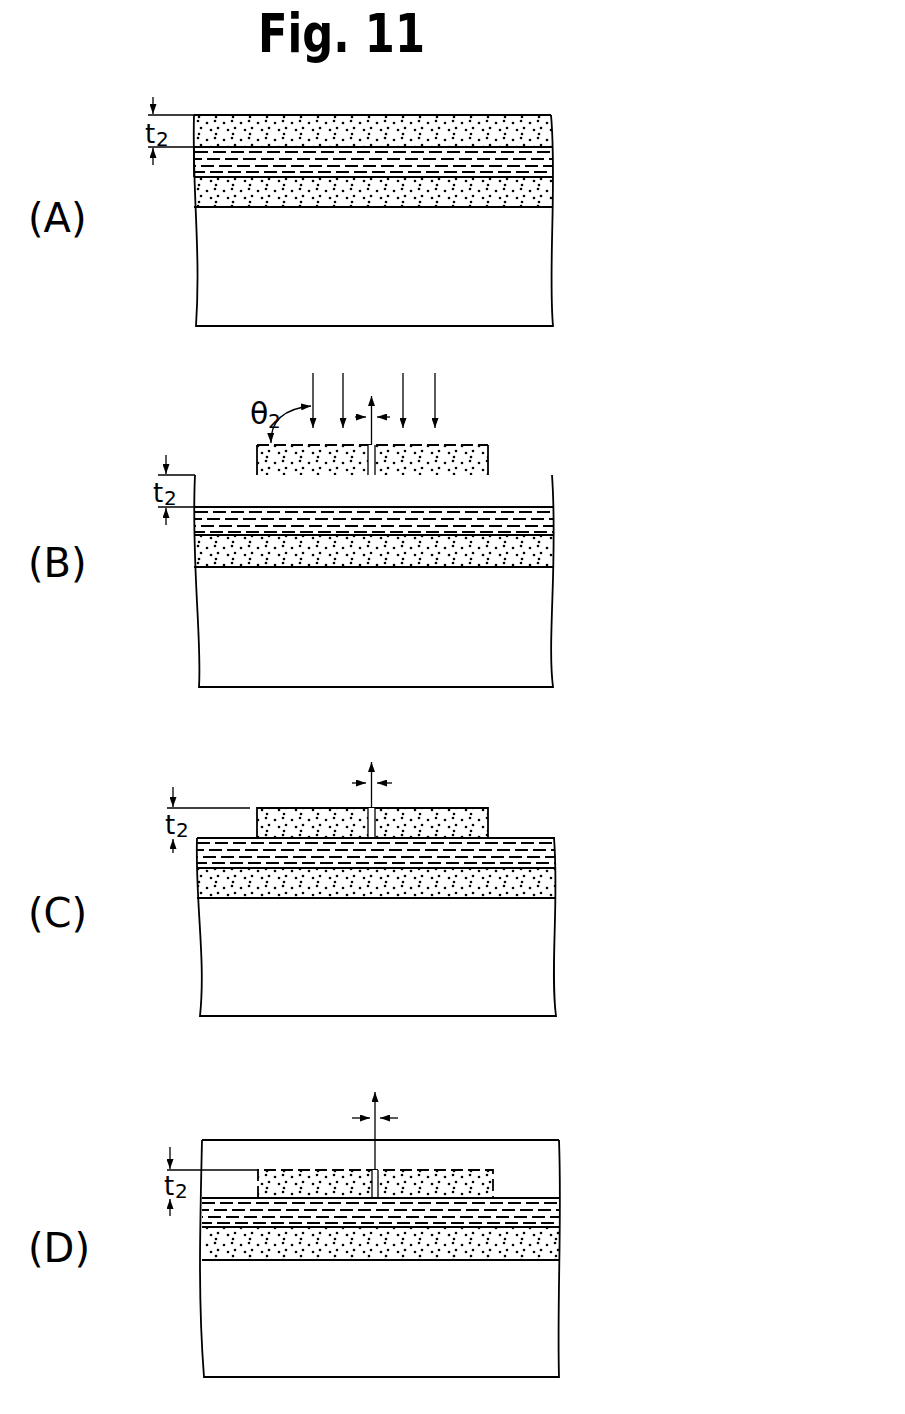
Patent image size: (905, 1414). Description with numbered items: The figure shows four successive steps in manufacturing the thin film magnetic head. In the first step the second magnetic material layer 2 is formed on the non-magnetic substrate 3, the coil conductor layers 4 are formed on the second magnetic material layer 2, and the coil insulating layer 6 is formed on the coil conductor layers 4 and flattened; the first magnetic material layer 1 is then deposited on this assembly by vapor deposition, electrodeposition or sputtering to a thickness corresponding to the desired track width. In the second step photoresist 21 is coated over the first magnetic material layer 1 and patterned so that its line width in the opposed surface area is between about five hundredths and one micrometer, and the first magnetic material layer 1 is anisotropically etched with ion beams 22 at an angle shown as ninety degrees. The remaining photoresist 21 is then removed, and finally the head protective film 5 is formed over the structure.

The first magnetic material layer 1 is at (540, 136).
The second magnetic material layer 2 is at (540, 196).
The non-magnetic substrate 3 is at (533, 283).
The coil conductor layers 4 is at (553, 157).
The head protective film 5 is at (535, 1169).
The coil insulating layer 6 is at (194, 170).
The photoresist 21 is at (470, 461).
The ion beams 22 is at (437, 392).